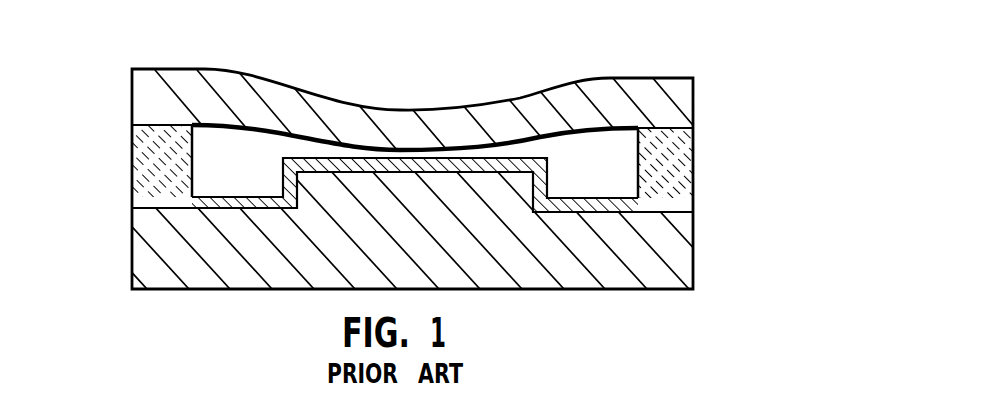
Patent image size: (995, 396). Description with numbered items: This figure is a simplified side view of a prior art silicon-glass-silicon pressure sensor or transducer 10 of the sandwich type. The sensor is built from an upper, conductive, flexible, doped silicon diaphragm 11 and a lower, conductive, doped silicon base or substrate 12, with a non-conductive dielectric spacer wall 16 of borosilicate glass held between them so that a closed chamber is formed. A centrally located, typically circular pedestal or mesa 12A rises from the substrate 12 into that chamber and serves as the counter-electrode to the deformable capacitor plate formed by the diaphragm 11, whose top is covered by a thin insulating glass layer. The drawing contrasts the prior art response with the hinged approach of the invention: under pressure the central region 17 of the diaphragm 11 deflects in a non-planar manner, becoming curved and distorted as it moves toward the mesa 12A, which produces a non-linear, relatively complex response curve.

The sensor or transducer 10 is at (119, 155).
The silicon diaphragm 11 is at (693, 102).
The silicon base or substrate 12 is at (693, 267).
The pedestal or mesa 12A is at (517, 184).
The spacer wall 16 is at (693, 187).
The diaphragm 17 is at (268, 82).